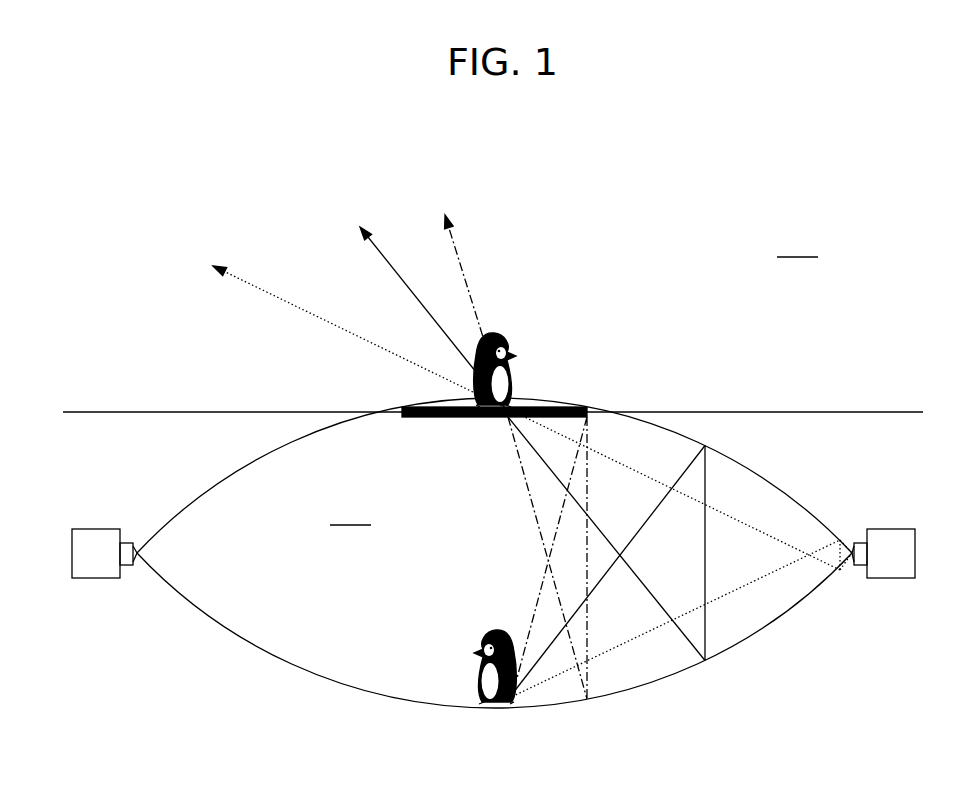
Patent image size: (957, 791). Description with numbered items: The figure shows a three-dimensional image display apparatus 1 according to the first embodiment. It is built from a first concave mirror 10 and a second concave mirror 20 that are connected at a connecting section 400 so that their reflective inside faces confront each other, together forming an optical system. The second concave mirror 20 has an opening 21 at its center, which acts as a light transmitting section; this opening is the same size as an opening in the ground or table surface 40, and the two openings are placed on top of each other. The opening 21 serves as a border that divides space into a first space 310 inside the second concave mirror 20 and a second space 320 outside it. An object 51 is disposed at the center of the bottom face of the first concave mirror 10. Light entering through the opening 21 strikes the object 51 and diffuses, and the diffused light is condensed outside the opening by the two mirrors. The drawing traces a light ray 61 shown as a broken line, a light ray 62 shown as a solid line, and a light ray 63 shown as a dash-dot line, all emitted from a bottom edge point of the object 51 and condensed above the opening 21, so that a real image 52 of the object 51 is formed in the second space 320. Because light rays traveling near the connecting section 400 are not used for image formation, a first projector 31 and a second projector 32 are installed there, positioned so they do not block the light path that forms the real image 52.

The three-dimensional image display apparatus 1 is at (86, 202).
The first concave mirror 10 is at (335, 683).
The second concave mirror 20 is at (173, 512).
The opening 21 is at (545, 412).
The first projector 31 is at (93, 580).
The second projector 32 is at (893, 580).
The ground or table surface 40 is at (877, 411).
The object 51 is at (473, 677).
The real image 52 is at (516, 356).
The light ray 61 is at (243, 277).
The light ray 62 is at (382, 236).
The light ray 63 is at (456, 237).
The first space 310 is at (352, 512).
The second space 320 is at (799, 245).
The connecting section 400 is at (133, 586).